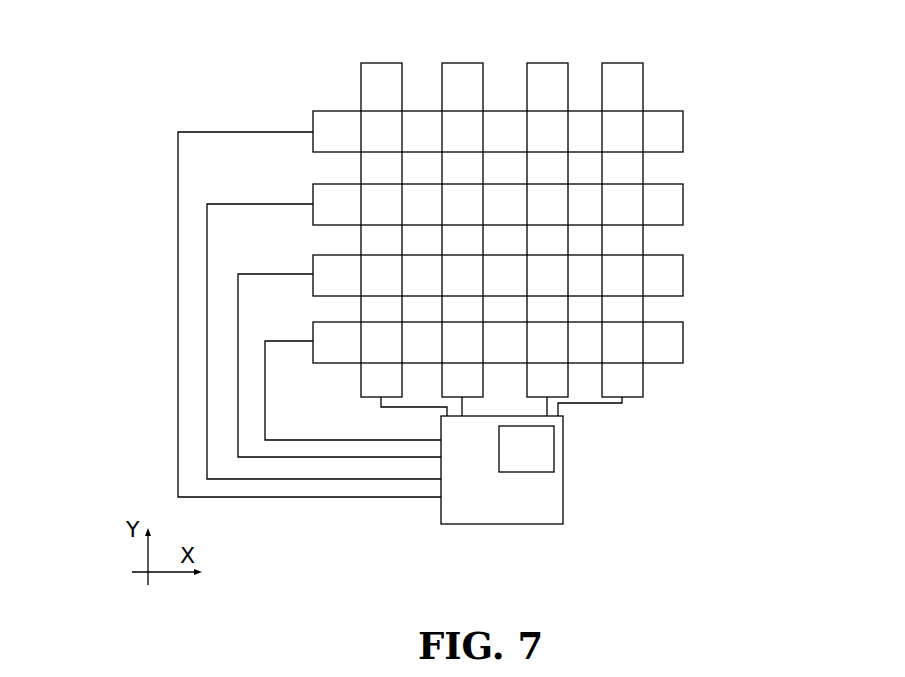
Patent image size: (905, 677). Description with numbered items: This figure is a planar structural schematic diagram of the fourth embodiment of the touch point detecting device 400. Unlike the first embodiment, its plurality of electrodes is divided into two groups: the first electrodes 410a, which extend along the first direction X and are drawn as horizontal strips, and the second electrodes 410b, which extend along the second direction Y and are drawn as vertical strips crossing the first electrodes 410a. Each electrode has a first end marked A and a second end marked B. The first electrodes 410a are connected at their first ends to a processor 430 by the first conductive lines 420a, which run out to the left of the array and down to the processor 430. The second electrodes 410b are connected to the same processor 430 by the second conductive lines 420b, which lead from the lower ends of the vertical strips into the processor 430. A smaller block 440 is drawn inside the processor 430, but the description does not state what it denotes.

The touch point detecting device 400 is at (320, 88).
The first electrodes 410a is at (683, 111).
The second electrodes 410b is at (643, 63).
The first conductive lines 420a is at (178, 230).
The second conductive lines 420b is at (600, 404).
The processor 430 is at (502, 470).
The determination unit 440 is at (556, 472).